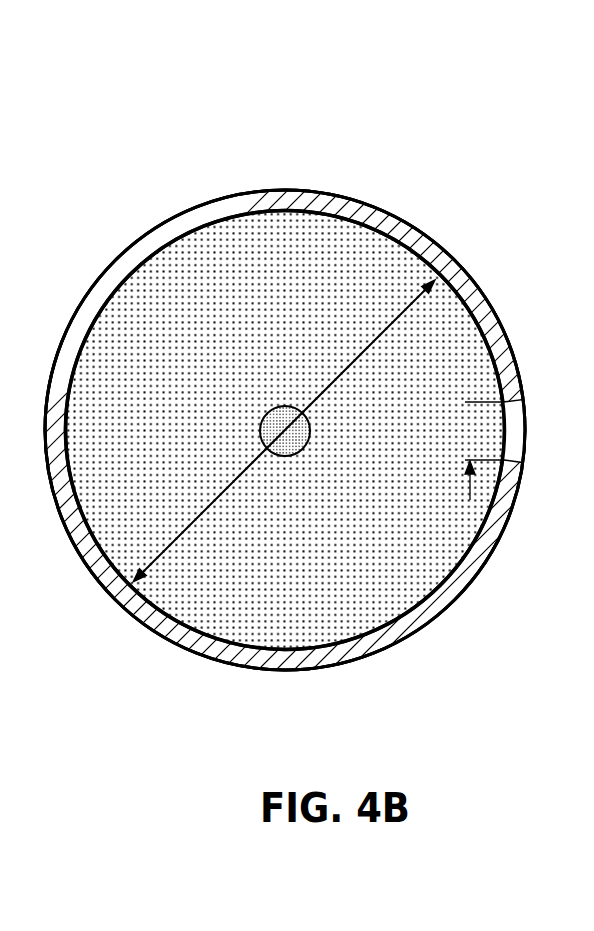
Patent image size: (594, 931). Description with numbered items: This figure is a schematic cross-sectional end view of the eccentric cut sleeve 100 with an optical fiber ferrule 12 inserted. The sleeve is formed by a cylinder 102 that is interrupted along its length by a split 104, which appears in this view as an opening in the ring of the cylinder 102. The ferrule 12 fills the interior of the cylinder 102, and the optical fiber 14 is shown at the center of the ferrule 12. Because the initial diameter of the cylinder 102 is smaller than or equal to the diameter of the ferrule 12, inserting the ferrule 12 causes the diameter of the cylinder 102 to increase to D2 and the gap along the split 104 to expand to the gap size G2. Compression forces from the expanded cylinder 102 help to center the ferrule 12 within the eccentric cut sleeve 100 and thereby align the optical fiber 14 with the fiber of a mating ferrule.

The eccentric cut sleeve 100 is at (278, 180).
The cylinder 102 is at (435, 241).
The split 104 is at (530, 430).
The optical fiber ferrule 12 is at (301, 604).
The optical fiber 14 is at (310, 432).
The gap size G2 is at (473, 392).
The diameter D2 is at (241, 474).